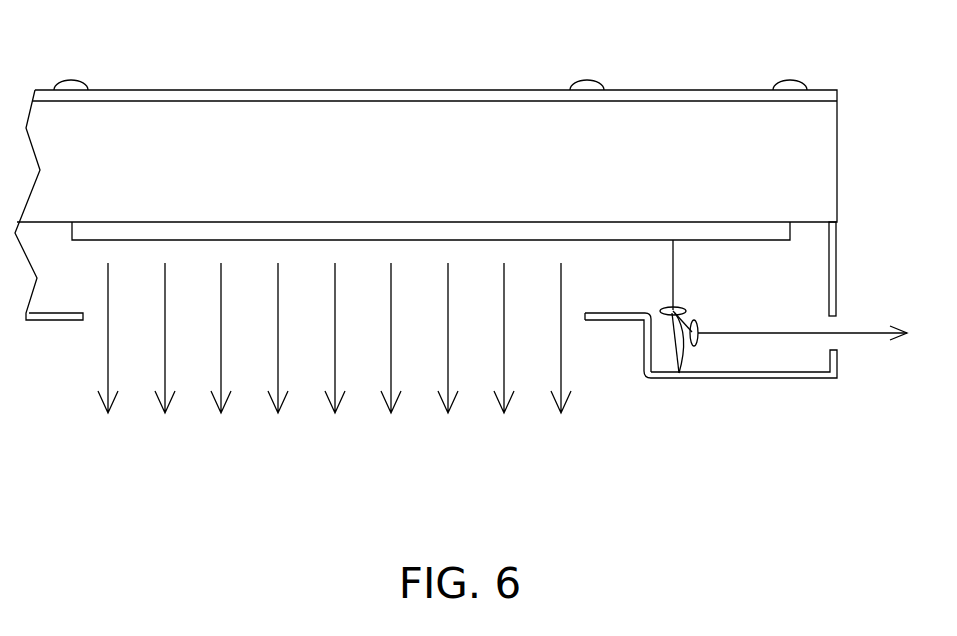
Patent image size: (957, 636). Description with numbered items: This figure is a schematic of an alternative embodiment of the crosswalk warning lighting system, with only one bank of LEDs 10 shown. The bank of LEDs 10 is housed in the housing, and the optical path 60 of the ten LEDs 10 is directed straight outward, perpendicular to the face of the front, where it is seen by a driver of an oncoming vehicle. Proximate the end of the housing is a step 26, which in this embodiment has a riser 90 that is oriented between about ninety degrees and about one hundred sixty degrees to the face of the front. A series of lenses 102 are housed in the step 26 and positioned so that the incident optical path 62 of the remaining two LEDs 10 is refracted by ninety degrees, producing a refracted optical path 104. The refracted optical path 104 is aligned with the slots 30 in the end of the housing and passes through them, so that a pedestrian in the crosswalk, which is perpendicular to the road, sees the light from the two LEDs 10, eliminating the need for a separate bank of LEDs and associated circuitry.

The light emitting diode lights 10 is at (426, 230).
The step 26 is at (801, 379).
The slots 30 is at (840, 322).
The optical path 60 is at (92, 450).
The incident optical path 62 is at (673, 275).
The riser 90 is at (644, 350).
The lenses 102 is at (679, 374).
The refracted optical path 104 is at (746, 335).